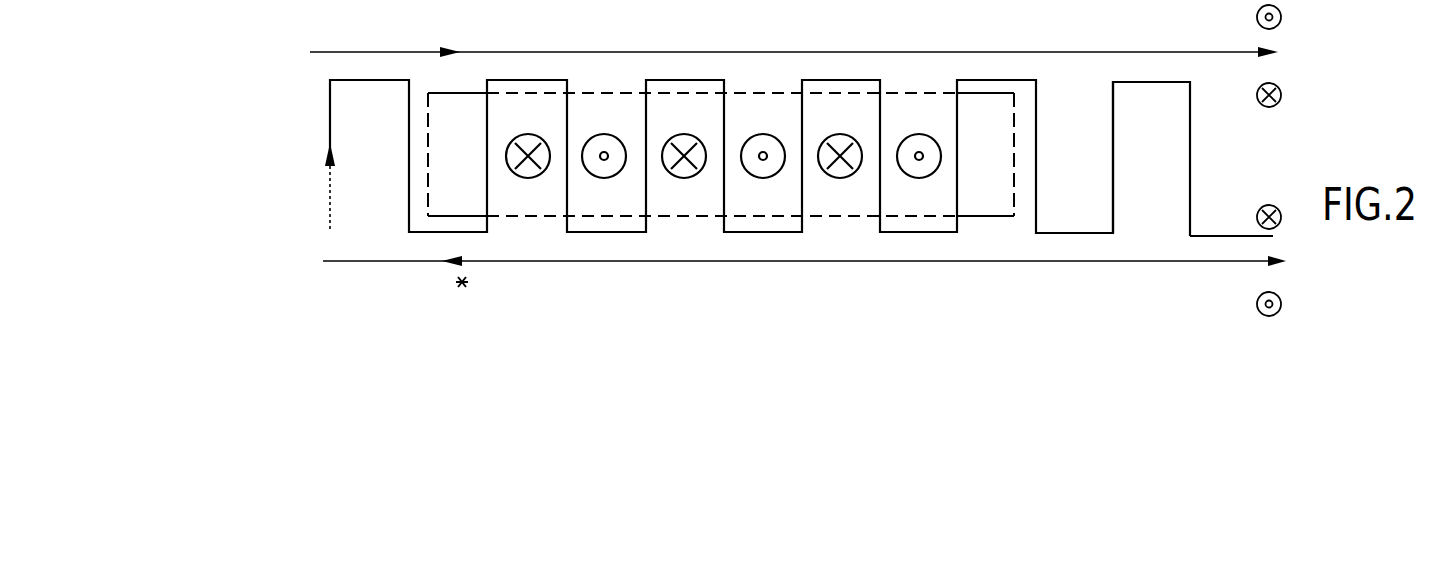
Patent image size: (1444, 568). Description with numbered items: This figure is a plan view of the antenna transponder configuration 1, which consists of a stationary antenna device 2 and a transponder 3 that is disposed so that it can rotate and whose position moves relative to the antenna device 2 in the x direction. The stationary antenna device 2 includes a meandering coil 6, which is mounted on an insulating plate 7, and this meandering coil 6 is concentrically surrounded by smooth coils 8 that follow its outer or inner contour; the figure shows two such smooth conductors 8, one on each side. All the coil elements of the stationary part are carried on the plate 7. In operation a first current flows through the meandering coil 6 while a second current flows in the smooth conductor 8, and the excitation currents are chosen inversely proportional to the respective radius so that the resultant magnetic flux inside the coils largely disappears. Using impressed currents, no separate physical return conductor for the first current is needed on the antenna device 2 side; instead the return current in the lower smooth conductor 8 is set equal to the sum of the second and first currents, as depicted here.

The antenna transponder configuration 1 is at (262, 147).
The stationary antenna device 2 is at (1244, 167).
The transponder 3 is at (841, 234).
The meandering coil 6 is at (1208, 237).
The insulating plate 7 is at (1155, 203).
The smooth coil 8 is at (1076, 55).